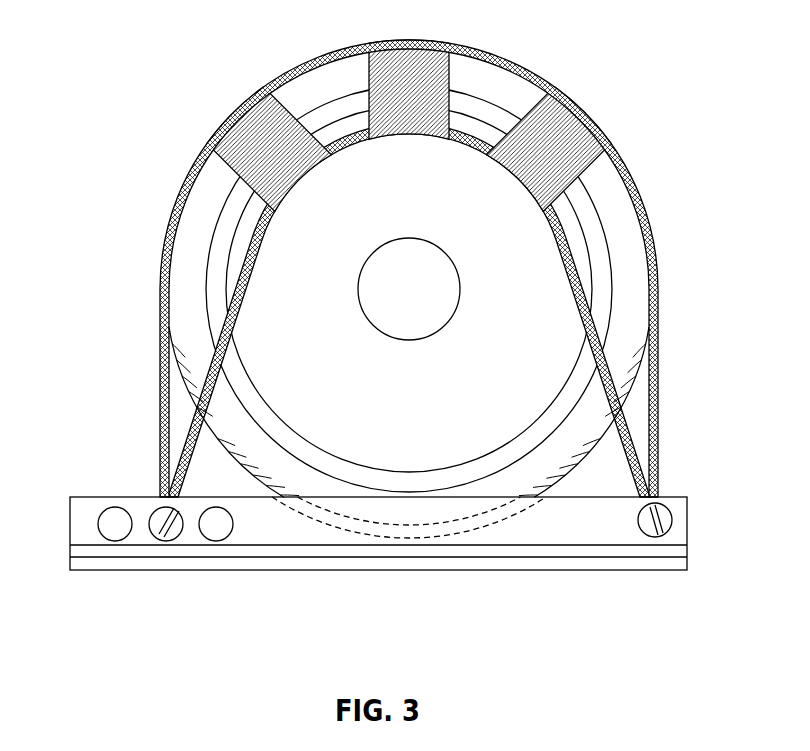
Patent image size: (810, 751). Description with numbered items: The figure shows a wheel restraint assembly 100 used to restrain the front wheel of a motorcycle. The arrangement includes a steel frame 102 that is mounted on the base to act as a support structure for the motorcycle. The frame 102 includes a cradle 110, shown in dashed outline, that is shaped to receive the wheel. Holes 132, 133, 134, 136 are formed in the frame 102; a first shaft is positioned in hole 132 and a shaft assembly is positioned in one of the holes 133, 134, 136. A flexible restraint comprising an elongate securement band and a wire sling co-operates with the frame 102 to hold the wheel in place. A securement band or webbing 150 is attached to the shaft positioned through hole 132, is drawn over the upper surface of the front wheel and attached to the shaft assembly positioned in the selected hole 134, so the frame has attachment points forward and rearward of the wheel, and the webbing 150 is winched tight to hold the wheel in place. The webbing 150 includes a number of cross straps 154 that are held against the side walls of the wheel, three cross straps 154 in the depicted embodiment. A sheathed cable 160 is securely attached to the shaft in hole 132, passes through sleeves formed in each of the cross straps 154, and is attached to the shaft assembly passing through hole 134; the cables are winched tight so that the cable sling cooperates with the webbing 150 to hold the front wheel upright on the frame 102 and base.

The wheel restraint assembly 100 is at (403, 322).
The frame 102 is at (403, 537).
The cradle 110 is at (407, 540).
The hole 132 is at (672, 518).
The hole 133 is at (118, 528).
The hole 134 is at (175, 530).
The hole 136 is at (222, 527).
The webbing 150 is at (505, 68).
The cross straps 154 is at (293, 180).
The sheathed cable 160 is at (633, 440).